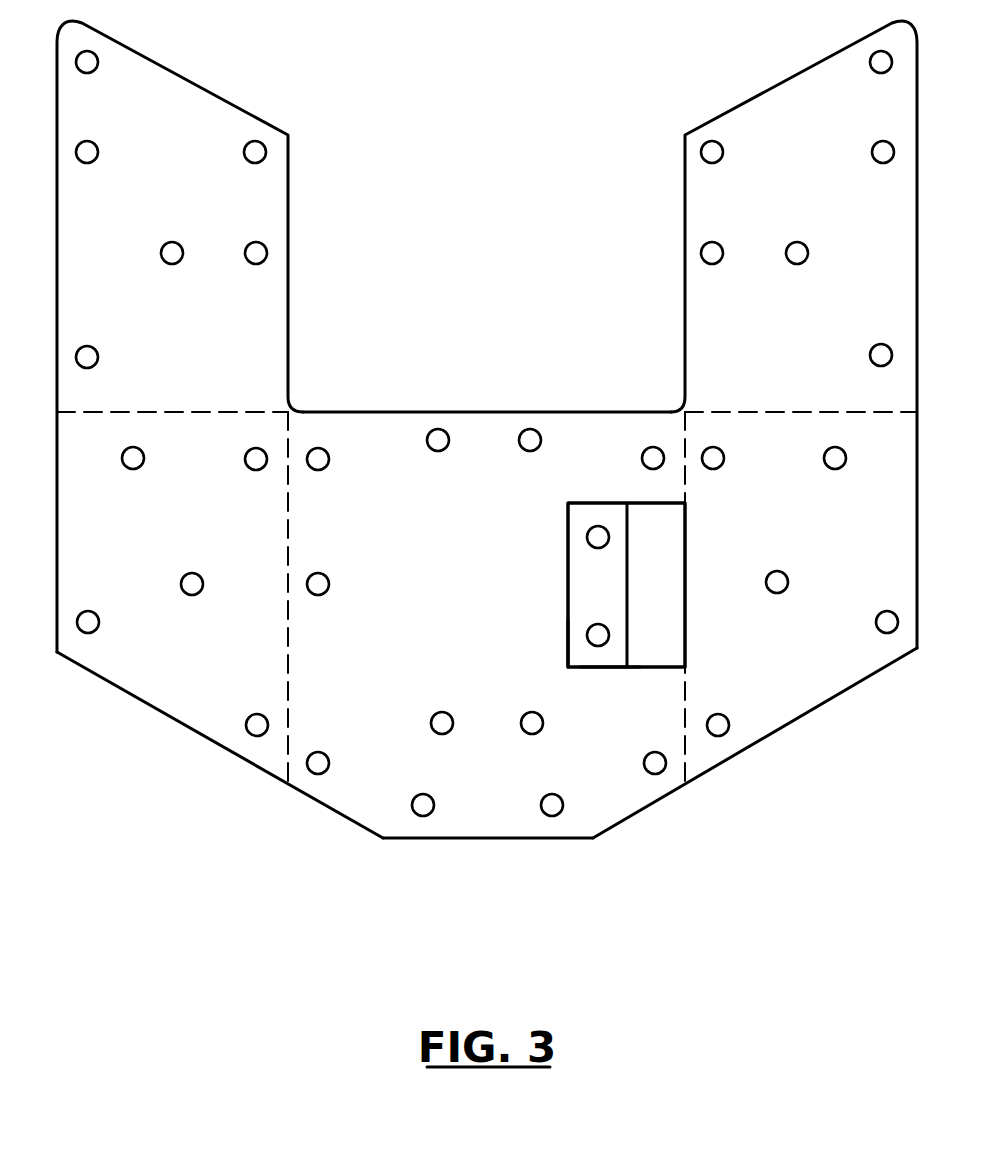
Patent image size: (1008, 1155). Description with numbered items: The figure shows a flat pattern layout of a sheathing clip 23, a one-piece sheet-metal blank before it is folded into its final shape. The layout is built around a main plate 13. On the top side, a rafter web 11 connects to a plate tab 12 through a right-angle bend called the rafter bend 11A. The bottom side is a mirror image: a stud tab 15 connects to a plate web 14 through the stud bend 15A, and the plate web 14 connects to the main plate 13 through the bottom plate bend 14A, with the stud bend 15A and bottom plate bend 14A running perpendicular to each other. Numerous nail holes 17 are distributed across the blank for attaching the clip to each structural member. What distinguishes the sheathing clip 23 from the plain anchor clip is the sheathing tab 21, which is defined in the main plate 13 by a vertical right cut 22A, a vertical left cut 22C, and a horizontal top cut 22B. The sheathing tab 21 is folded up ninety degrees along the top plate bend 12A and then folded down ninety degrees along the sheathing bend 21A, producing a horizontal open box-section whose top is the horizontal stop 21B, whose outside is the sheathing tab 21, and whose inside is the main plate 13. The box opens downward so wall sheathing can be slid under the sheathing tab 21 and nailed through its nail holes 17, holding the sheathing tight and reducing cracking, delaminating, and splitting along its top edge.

The rafter web 11 is at (792, 107).
The rafter bend 11A is at (722, 410).
The plate tab 12 is at (788, 700).
The top plate bend 12A is at (687, 743).
The main plate 13 is at (378, 763).
The plate web 14 is at (197, 678).
The bottom plate bend 14A is at (288, 743).
The stud tab 15 is at (155, 102).
The stud bend 15A is at (228, 412).
The nail holes 17 is at (262, 252).
The sheathing tab 21 is at (590, 582).
The sheathing bend 21A is at (598, 503).
The horizontal stop 21B is at (658, 643).
The right cut 22A is at (608, 668).
The top cut 22B is at (565, 647).
The left cut 22C is at (625, 517).
The sheathing clip 23 is at (627, 778).